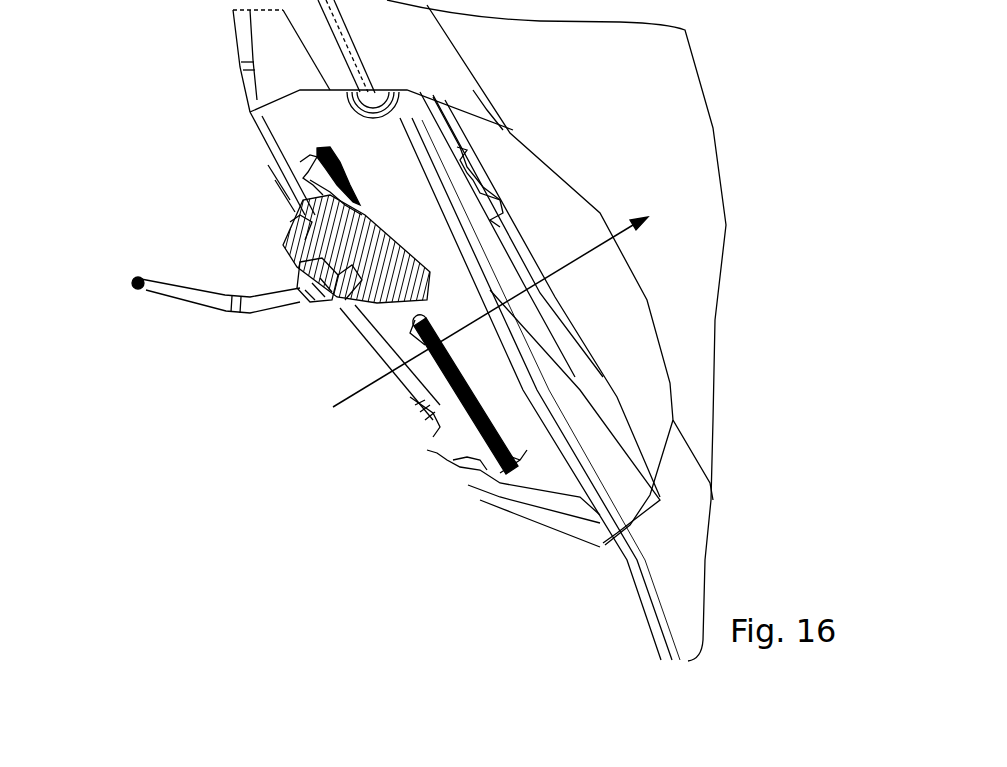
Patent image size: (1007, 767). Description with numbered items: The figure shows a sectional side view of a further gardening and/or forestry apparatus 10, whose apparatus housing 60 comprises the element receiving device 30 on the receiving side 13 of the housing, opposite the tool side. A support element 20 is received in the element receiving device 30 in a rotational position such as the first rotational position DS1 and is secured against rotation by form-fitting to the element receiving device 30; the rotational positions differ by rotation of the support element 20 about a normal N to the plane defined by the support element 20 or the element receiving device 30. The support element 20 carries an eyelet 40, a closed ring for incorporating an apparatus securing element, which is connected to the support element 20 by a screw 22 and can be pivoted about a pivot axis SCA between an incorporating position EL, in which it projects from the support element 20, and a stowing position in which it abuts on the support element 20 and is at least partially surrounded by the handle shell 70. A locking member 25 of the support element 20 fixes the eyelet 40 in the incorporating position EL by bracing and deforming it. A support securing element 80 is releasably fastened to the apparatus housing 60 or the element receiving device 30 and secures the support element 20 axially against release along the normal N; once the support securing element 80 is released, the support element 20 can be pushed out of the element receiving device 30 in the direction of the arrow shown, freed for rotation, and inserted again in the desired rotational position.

The gardening and/or forestry apparatus 10 is at (192, 85).
The receiving side 13 is at (130, 155).
The first rotational position DS1 is at (130, 185).
The incorporating position EL is at (130, 215).
The support securing element 80 is at (360, 210).
The element receiving device 30 is at (310, 178).
The screw 22 is at (290, 222).
The pivot axis SCA is at (310, 282).
The locking member 25 is at (333, 300).
The eyelet 40 is at (139, 292).
The normal N is at (343, 386).
The handle shell 70 is at (415, 400).
The support element 20 is at (437, 453).
The apparatus housing 60 is at (632, 607).